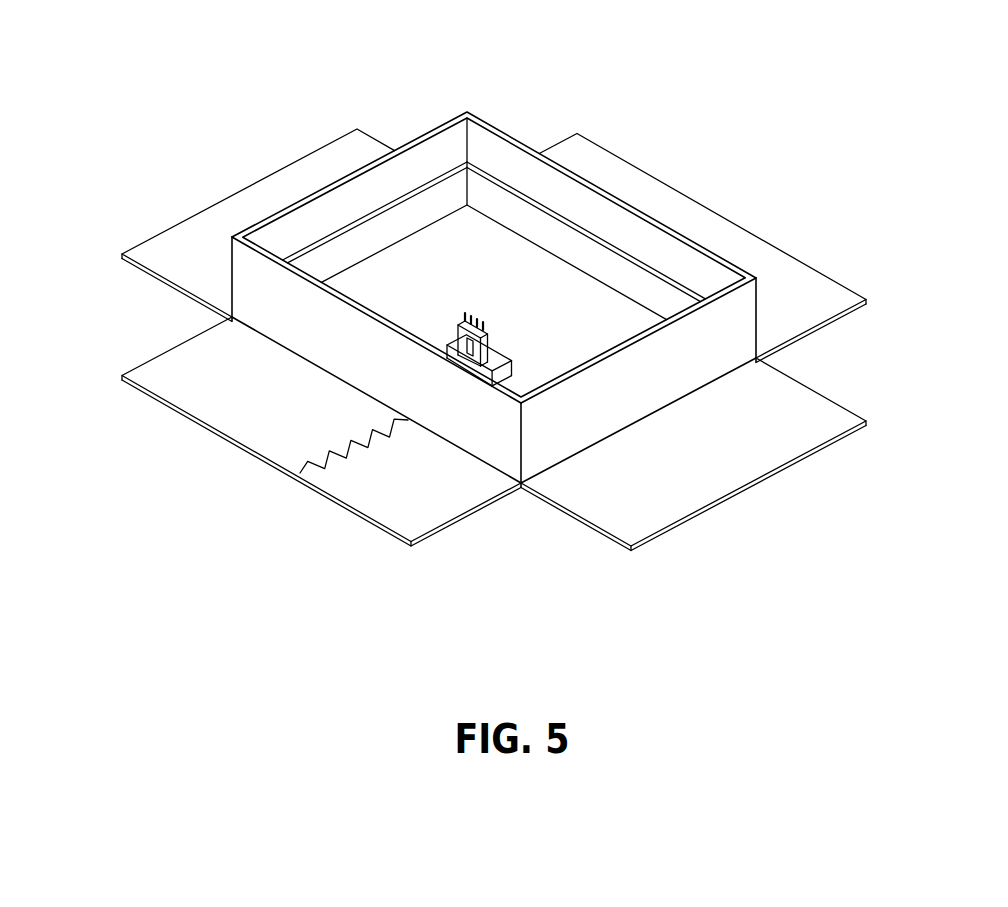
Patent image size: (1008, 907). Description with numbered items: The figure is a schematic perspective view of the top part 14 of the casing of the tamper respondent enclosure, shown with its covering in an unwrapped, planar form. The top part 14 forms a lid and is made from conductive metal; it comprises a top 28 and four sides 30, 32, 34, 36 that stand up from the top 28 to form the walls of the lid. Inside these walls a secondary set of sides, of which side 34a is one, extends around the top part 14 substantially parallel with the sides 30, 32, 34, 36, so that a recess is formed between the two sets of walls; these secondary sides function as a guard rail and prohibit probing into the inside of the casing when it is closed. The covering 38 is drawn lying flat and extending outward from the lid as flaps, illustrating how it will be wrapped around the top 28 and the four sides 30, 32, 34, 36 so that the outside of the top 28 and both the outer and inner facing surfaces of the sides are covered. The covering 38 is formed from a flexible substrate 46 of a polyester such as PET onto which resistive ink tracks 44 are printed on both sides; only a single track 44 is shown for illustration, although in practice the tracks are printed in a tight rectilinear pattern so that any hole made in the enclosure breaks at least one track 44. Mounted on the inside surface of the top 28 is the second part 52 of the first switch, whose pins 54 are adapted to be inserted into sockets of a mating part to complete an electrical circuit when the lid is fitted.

The top part 14 is at (214, 112).
The top 28 is at (481, 242).
The side 30 is at (758, 315).
The side 32 is at (677, 233).
The side 34 is at (425, 130).
The secondary side 34a is at (452, 122).
The side 36 is at (230, 317).
The covering 38 is at (213, 233).
The resistive ink track 44 is at (357, 455).
The flexible substrate 46 is at (157, 247).
The second part 52 is at (515, 362).
The pins 54 is at (487, 335).